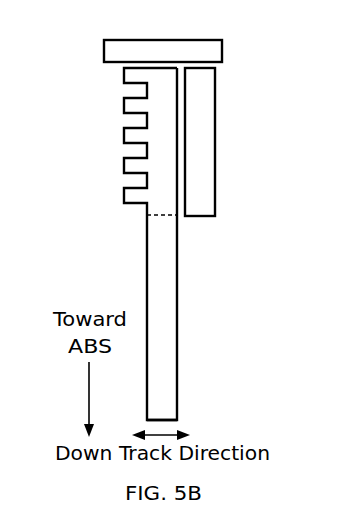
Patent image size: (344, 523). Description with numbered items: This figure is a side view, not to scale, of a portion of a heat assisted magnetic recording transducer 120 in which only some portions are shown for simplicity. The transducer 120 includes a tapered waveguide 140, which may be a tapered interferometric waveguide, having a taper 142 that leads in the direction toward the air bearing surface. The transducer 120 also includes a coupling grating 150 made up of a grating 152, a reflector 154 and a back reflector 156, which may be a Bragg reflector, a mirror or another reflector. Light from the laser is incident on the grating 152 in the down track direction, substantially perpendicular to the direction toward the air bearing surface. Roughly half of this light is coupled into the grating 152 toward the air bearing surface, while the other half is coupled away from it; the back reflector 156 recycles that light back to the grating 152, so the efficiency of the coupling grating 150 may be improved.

The coupling grating 150 is at (60, 97).
The HAMR transducer 120 is at (186, 27).
The back reflector 156 is at (222, 62).
The reflector 154 is at (215, 142).
The grating 152 is at (125, 191).
The taper 142 is at (118, 272).
The tapered waveguide 140 is at (177, 376).